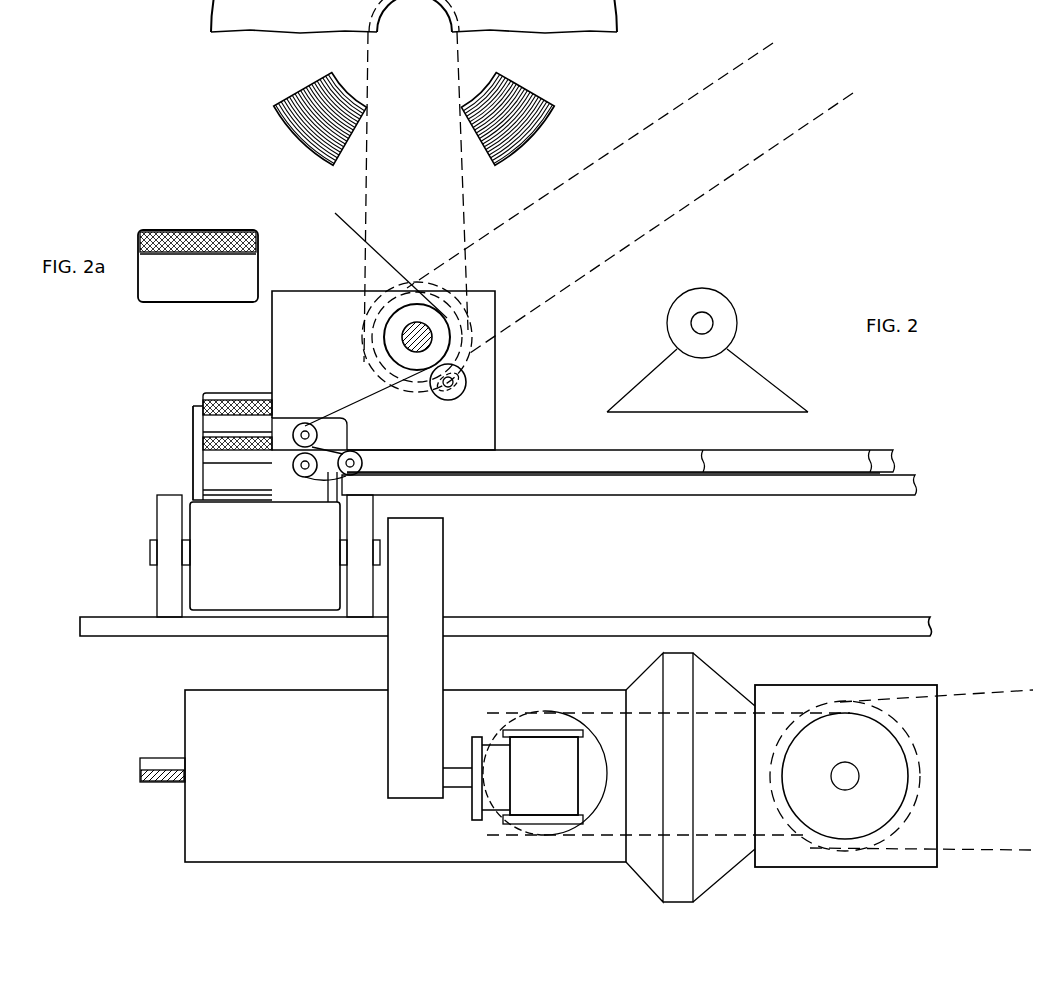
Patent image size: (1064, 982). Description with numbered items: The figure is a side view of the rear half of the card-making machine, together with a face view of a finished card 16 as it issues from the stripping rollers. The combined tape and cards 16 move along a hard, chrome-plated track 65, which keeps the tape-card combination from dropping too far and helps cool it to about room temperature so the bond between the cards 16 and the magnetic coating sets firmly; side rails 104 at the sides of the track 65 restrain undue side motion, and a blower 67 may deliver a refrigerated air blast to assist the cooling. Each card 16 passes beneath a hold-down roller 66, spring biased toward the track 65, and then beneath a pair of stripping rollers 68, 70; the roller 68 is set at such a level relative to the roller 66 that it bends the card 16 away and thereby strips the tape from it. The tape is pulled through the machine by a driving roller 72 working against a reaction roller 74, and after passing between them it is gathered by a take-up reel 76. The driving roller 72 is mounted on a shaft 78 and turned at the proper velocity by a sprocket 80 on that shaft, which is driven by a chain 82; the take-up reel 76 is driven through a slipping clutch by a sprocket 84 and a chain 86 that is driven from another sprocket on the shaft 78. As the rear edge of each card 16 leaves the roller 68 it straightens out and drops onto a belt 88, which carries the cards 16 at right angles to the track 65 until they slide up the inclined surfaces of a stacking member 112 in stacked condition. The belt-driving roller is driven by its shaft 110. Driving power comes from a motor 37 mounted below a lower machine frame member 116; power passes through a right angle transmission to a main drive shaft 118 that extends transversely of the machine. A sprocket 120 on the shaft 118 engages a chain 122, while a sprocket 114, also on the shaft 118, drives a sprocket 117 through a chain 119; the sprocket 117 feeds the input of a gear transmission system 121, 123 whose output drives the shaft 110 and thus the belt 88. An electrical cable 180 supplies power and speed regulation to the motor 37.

The card 16 is at (228, 431).
The motor 37 is at (265, 700).
The track 65 is at (850, 485).
The hold-down roller 66 is at (356, 452).
The blower 67 is at (738, 323).
The stripping roller 68 is at (292, 470).
The stripping roller 70 is at (318, 435).
The driving roller 72 is at (384, 345).
The reaction roller 74 is at (466, 386).
The take-up reel 76 is at (598, 69).
The shaft 78 is at (403, 330).
The sprocket 80 is at (375, 378).
The chain 82 is at (548, 300).
The sprocket 84 is at (441, 70).
The chain 86 is at (362, 196).
The belt 88 is at (468, 265).
The side rails 104 is at (850, 455).
The shaft 110 is at (152, 553).
The stacking member 112 is at (199, 459).
The sprocket 114 is at (905, 795).
The lower machine frame member 116 is at (560, 630).
The sprocket 117 is at (532, 836).
The main drive shaft 118 is at (845, 781).
The chain 119 is at (708, 713).
The sprocket 120 is at (915, 746).
The gear transmission system 121 is at (513, 777).
The chain 122 is at (975, 683).
The gear transmission system 123 is at (398, 730).
The electrical cable 180 is at (166, 757).